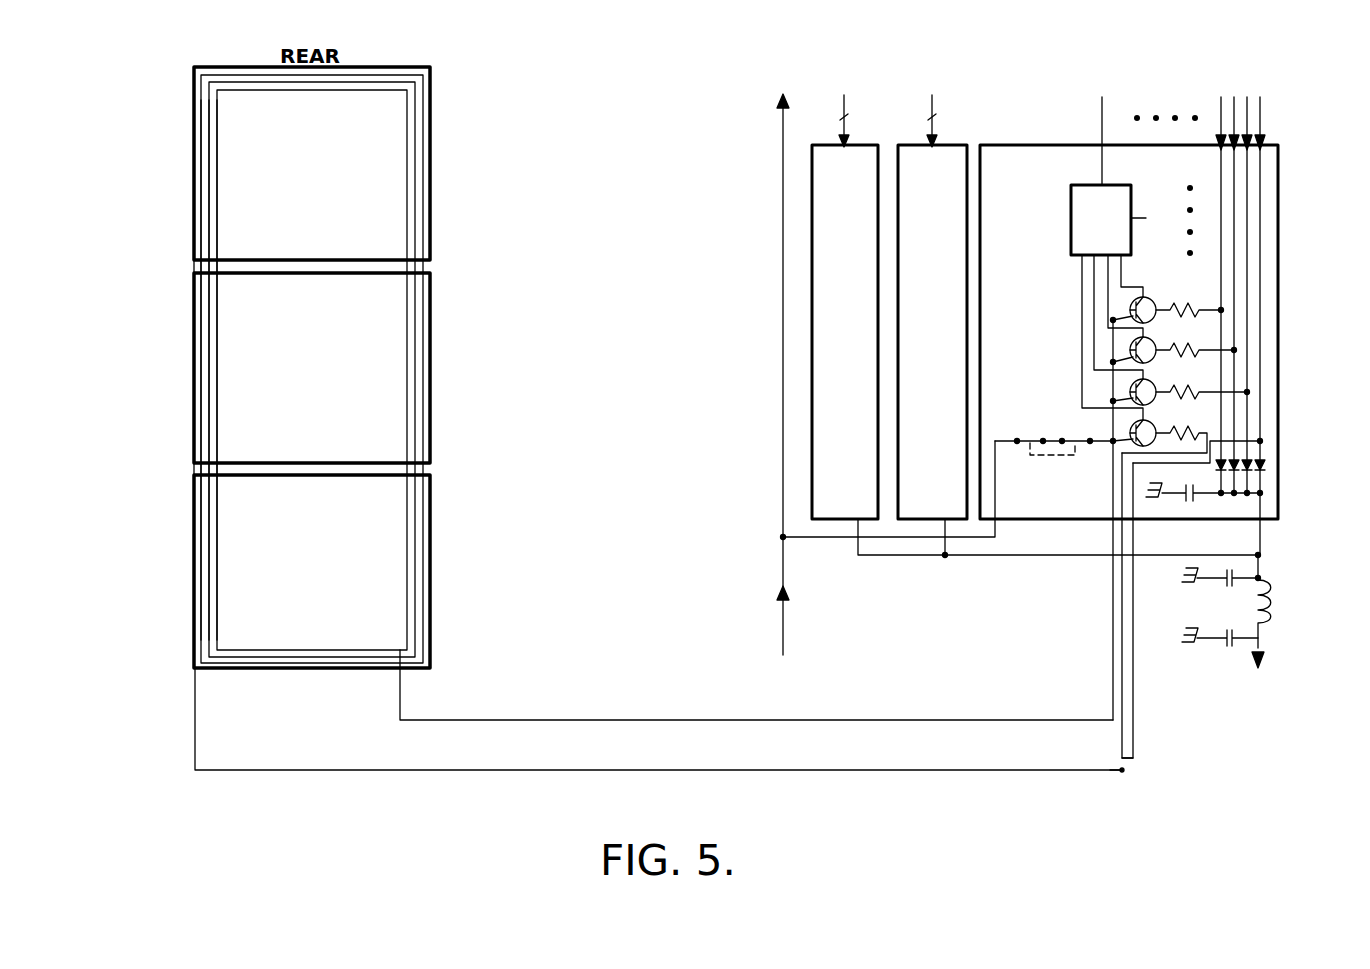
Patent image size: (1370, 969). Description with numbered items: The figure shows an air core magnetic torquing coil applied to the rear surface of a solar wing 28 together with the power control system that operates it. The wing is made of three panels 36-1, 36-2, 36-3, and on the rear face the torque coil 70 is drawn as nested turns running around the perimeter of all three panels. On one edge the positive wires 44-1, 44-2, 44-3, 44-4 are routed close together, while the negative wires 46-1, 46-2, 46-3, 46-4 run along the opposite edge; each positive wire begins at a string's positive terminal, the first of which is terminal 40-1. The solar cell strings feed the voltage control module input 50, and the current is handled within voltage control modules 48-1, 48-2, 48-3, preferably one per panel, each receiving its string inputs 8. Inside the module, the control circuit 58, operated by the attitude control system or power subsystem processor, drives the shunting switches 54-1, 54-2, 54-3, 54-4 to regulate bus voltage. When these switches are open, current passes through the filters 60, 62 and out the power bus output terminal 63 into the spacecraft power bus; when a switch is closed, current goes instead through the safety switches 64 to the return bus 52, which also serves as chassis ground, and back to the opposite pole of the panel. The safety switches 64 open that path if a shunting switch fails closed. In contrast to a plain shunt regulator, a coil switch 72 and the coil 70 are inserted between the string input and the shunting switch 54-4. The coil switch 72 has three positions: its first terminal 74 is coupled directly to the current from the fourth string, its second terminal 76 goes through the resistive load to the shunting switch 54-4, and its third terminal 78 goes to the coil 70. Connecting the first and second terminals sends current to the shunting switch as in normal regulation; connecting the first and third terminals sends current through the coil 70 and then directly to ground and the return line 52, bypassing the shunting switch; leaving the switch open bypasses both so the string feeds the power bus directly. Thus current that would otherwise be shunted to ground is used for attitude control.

The solar wing 28 is at (542, 92).
The positive terminal 40-1 is at (194, 72).
The panel 36-1 is at (431, 160).
The panel 36-2 is at (429, 424).
The panel 36-3 is at (429, 561).
The positive wire 44-1 is at (432, 293).
The positive wire 44-2 is at (422, 332).
The positive wire 44-3 is at (411, 308).
The positive wire 44-4 is at (405, 360).
The negative wire 46-1 is at (200, 413).
The negative wire 46-2 is at (207, 497).
The negative wire 46-3 is at (216, 545).
The negative wire 46-4 is at (218, 580).
The air core torque coil 70 is at (398, 395).
The return bus 52 is at (780, 177).
The voltage control module 48-1 is at (1053, 143).
The voltage control module 48-2 is at (898, 162).
The voltage control module 48-3 is at (812, 162).
The signal input 8 is at (897, 121).
The control circuit 58 is at (1070, 200).
The voltage control module input 50 is at (1280, 118).
The shunting switch 54-1 is at (1130, 305).
The shunting switch 54-2 is at (1130, 348).
The shunting switch 54-3 is at (1130, 388).
The shunting switch 54-4 is at (1130, 430).
The safety switches 64 is at (1055, 462).
The filter 60 is at (1275, 495).
The filter 62 is at (1278, 616).
The power bus output terminal 63 is at (1263, 656).
The coil switch 72 is at (1130, 770).
The first terminal 74 is at (1118, 757).
The second terminal 76 is at (1124, 754).
The third terminal 78 is at (1120, 772).